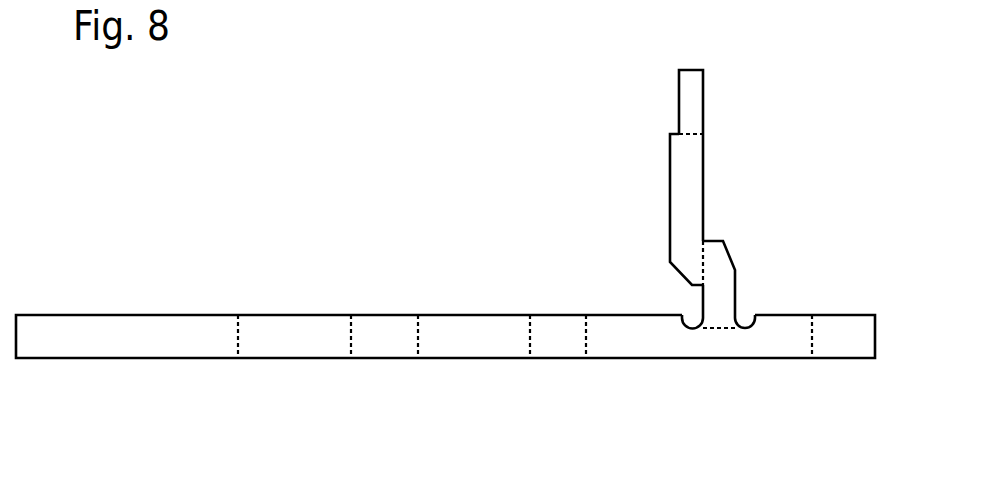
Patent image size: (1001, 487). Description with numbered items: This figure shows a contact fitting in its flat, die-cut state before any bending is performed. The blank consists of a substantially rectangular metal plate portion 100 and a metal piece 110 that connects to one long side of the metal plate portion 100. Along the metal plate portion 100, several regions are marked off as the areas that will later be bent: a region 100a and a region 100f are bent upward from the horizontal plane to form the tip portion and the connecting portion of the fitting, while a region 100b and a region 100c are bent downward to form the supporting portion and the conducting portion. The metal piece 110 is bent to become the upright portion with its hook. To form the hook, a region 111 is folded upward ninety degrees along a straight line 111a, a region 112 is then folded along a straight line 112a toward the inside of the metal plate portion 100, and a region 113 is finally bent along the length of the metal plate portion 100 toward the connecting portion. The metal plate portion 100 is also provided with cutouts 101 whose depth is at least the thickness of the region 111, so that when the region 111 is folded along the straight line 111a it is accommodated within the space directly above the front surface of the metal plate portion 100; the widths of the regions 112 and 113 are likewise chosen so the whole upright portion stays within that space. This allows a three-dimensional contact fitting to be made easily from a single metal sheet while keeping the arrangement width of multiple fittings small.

The metal plate portion 100 is at (440, 280).
The region of the metal plate portion 100a is at (238, 362).
The region of the metal plate portion 100b is at (418, 362).
The region of the metal plate portion 100c is at (586, 362).
The region of the metal plate portion 100f is at (875, 362).
The cutouts 101 is at (745, 318).
The metal piece 110 is at (640, 132).
The region 111 is at (722, 275).
The straight line 111a is at (717, 331).
The region 112 is at (687, 203).
The straight line 112a is at (703, 263).
The region 113 is at (688, 115).